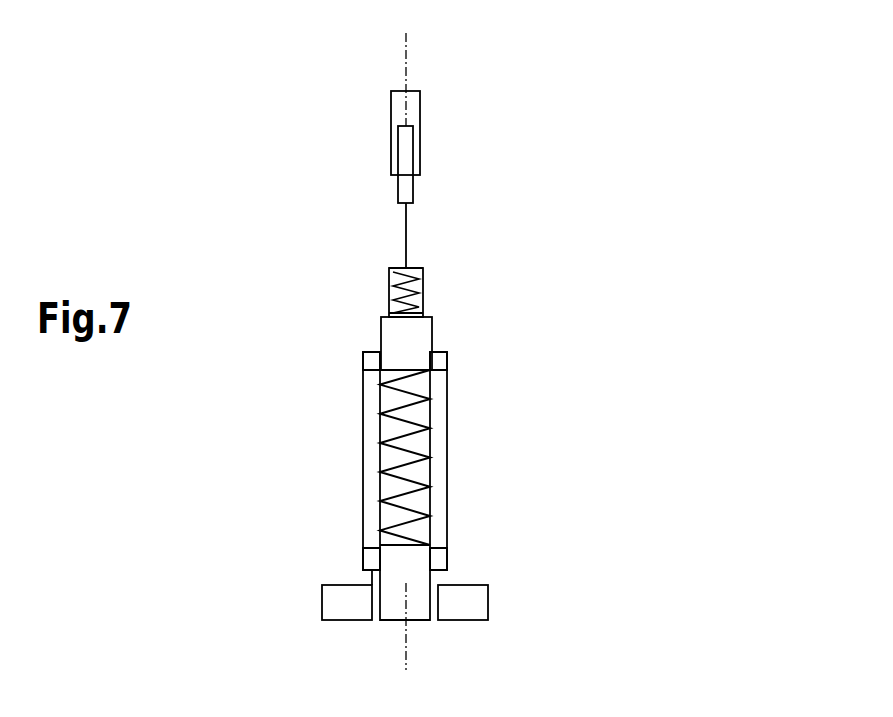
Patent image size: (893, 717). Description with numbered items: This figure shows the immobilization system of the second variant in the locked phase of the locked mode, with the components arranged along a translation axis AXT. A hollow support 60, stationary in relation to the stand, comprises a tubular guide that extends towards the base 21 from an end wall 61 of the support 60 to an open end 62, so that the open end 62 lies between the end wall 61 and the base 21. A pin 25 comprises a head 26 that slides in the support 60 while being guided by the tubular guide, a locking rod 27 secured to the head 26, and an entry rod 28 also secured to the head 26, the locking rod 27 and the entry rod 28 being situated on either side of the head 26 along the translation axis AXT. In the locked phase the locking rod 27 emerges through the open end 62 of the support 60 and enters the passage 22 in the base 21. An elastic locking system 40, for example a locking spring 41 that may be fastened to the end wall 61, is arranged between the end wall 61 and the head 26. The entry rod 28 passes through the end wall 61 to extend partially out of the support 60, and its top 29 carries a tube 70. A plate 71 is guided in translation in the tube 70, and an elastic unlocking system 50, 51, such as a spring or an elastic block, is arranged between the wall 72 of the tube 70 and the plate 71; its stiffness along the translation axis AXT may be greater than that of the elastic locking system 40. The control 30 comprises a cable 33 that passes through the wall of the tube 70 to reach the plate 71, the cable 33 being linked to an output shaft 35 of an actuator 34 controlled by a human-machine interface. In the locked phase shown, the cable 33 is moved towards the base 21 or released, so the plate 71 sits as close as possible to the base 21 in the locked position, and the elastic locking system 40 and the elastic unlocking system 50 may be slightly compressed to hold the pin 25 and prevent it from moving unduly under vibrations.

The translation axis AXT is at (403, 50).
The control 30 is at (383, 129).
The actuator 34 is at (420, 108).
The output shaft 35 is at (403, 157).
The cable 33 is at (406, 228).
The tube 70 is at (389, 268).
The wall 72 is at (420, 268).
The elastic unlocking system 50 is at (467, 292).
The compression spring 51 is at (413, 290).
The plate 71 is at (482, 331).
The top 29 is at (390, 313).
The entry rod 28 is at (393, 337).
The end wall 61 is at (365, 355).
The support 60 is at (363, 413).
The elastic locking system 40 is at (458, 457).
The locking spring 41 is at (418, 483).
The head 26 is at (366, 556).
The locking rod 27 is at (418, 580).
The open end 62 is at (371, 578).
The base 21 is at (333, 596).
The passage 22 is at (432, 617).
The pin 25 is at (393, 620).